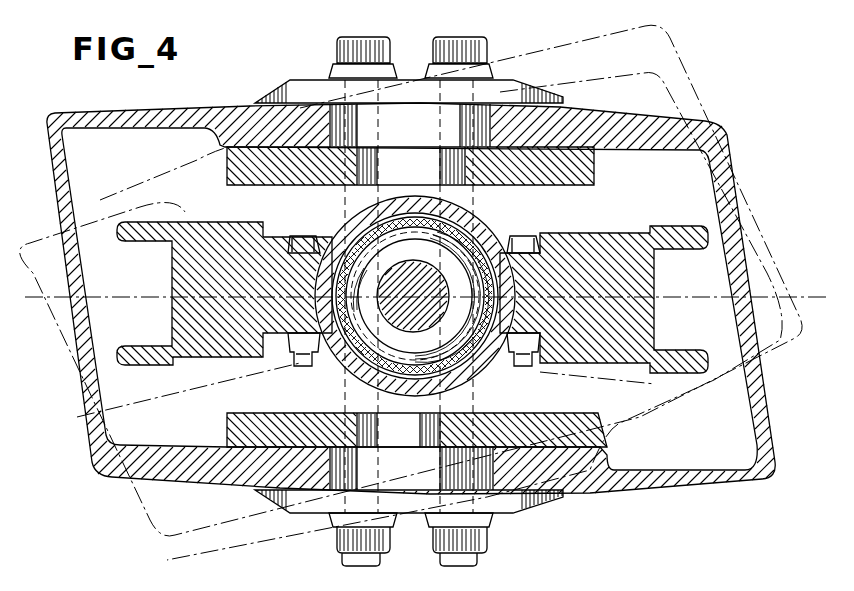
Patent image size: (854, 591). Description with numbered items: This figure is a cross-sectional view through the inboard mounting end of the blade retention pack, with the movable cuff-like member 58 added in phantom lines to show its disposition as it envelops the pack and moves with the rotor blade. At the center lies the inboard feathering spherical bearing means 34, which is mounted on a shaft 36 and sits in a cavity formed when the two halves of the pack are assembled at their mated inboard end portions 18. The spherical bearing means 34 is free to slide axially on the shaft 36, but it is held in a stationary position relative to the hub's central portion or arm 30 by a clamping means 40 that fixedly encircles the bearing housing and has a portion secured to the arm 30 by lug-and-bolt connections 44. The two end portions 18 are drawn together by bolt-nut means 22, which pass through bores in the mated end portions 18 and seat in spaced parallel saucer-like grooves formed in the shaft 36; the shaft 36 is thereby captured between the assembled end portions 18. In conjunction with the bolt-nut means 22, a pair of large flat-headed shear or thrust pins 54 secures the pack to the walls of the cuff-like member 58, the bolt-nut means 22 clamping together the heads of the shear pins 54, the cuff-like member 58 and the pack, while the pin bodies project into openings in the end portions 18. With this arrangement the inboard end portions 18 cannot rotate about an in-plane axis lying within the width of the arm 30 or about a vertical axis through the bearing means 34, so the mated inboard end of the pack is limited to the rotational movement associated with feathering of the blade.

The inboard end portion 18 is at (594, 172).
The bolt-nut means 22 is at (436, 62).
The central portion or arm of the hub 30 is at (184, 314).
The inboard feathering spherical bearing means 34 is at (348, 380).
The shaft 36 is at (415, 291).
The clamping means 40 is at (334, 210).
The lug-and-bolt connections 44 is at (530, 238).
The shear or thrust pins 54 is at (300, 88).
The cuff-like member 58 is at (709, 487).